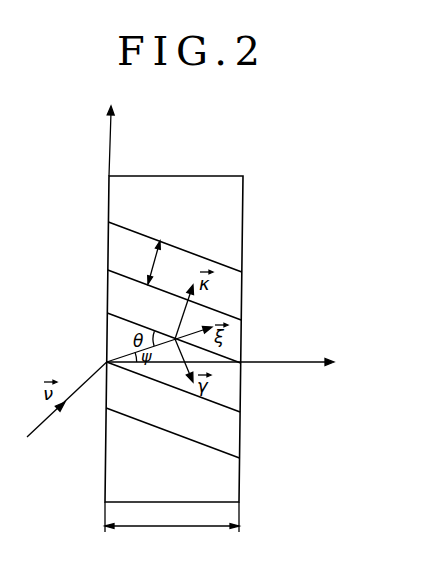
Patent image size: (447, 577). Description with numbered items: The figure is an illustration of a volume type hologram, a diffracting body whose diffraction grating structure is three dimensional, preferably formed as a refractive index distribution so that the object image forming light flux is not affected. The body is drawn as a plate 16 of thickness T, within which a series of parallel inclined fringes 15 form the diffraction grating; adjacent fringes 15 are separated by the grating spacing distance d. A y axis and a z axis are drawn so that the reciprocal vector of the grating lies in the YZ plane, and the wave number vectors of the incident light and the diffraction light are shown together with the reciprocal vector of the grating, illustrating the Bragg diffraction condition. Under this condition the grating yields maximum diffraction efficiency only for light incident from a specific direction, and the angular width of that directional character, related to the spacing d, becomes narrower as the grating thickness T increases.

The slanted layers (fringe planes) 15 is at (130, 230).
The medium plate 16 is at (243, 224).
The grating spacing distance d is at (159, 262).
The plate thickness T is at (172, 517).
The Y axis y is at (117, 137).
The Z axis z is at (227, 364).